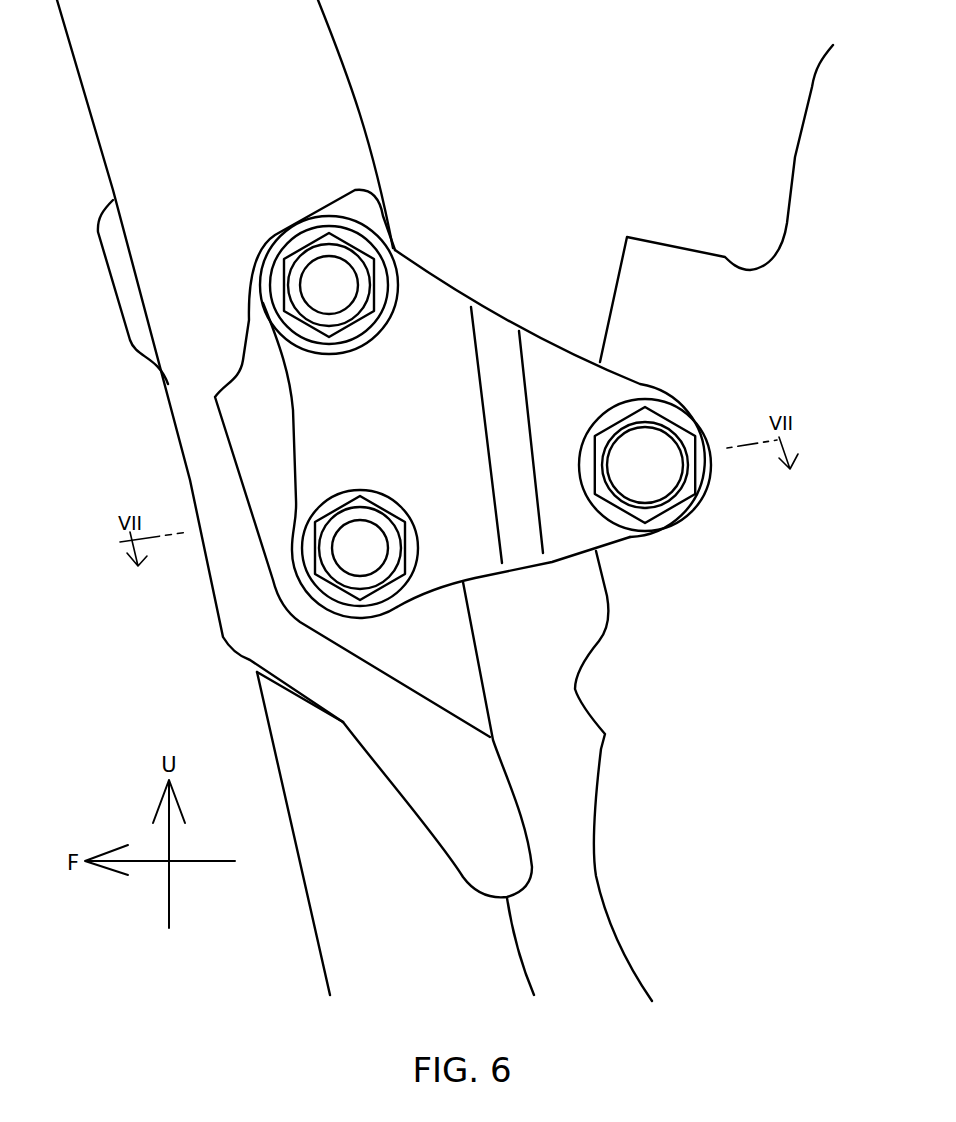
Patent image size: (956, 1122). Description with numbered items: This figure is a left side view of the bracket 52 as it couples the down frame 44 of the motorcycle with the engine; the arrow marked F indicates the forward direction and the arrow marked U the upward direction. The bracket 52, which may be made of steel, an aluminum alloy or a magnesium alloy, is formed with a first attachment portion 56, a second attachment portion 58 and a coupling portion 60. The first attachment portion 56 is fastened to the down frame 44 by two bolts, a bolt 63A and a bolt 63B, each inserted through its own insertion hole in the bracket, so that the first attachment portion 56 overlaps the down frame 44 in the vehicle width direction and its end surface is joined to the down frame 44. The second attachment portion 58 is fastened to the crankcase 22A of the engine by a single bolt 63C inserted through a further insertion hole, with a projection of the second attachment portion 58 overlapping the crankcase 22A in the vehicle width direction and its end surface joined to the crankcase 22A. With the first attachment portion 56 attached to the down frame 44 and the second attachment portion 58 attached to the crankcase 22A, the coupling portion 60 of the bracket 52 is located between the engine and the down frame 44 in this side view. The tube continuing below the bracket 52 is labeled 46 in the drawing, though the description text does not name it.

The crankcase 22A is at (673, 255).
The down frame 44 is at (330, 65).
The lower tube 46 is at (337, 914).
The bracket 52 is at (438, 274).
The first attachment portion 56 is at (457, 302).
The second attachment portion 58 is at (540, 352).
The coupling portion 60 is at (515, 558).
The bolt 63A is at (341, 270).
The bolt 63B is at (340, 548).
The bolt 63C is at (656, 440).